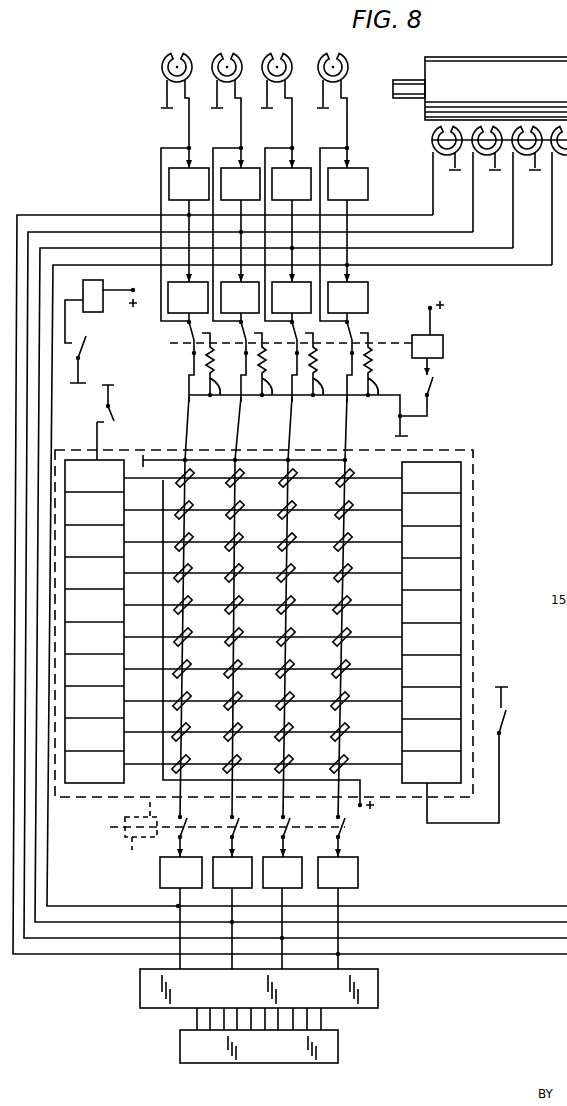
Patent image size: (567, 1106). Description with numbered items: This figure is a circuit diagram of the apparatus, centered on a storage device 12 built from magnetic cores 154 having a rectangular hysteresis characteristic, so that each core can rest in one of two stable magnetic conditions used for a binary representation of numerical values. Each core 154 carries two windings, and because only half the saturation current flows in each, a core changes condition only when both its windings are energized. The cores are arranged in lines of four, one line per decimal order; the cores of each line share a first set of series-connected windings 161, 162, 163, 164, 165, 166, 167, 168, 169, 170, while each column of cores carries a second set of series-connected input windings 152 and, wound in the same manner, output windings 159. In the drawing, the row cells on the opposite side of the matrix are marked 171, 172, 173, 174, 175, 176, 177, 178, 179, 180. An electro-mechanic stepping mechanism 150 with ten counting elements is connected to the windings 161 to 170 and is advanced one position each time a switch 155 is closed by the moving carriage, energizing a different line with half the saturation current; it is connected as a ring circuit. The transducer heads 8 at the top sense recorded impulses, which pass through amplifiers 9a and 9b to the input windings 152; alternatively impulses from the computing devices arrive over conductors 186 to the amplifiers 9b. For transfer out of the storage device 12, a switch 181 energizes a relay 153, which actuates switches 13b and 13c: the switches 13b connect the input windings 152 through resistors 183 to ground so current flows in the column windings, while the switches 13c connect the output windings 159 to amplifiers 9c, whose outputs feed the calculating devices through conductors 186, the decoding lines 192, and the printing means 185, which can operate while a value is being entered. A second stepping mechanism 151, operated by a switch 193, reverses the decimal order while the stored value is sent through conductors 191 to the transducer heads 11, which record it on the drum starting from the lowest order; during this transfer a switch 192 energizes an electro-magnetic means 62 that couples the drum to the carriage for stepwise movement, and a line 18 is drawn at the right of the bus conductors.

The transducer heads 8 is at (219, 55).
The amplifiers 9a is at (255, 185).
The amplifiers 9b is at (258, 298).
The amplifiers 9c is at (250, 875).
The transducer heads 11 is at (432, 141).
The storage device 12 is at (437, 453).
The switches 13b is at (192, 348).
The switches 13c is at (235, 830).
The line 18 is at (520, 924).
The electro-magnetic means 62 is at (95, 312).
The stepping mechanism 150 is at (97, 772).
The second stepping mechanism 151 is at (443, 736).
The input windings 152 is at (209, 427).
The relay 153 is at (444, 346).
The magnetic cores 154 is at (188, 483).
The switch 155 is at (115, 412).
The output windings 159 is at (184, 803).
The windings 161 is at (155, 480).
The windings 162 is at (155, 512).
The windings 163 is at (155, 544).
The windings 164 is at (155, 575).
The windings 165 is at (155, 607).
The windings 166 is at (155, 639).
The windings 167 is at (155, 671).
The windings 168 is at (155, 703).
The windings 169 is at (155, 734).
The windings 170 is at (155, 766).
The row line 171 is at (370, 480).
The row line 172 is at (370, 512).
The row line 173 is at (370, 544).
The row line 174 is at (370, 575).
The row line 175 is at (370, 607).
The row line 176 is at (370, 639).
The row line 177 is at (370, 671).
The row line 178 is at (370, 703).
The row line 179 is at (370, 734).
The row line 180 is at (370, 766).
The switch 181 is at (433, 384).
The resistors 183 is at (210, 400).
The printing means 185 is at (320, 1055).
The conductors 186 is at (92, 232).
The conductors 191 is at (433, 198).
The switch 192 is at (87, 347).
The switch 193 is at (507, 722).